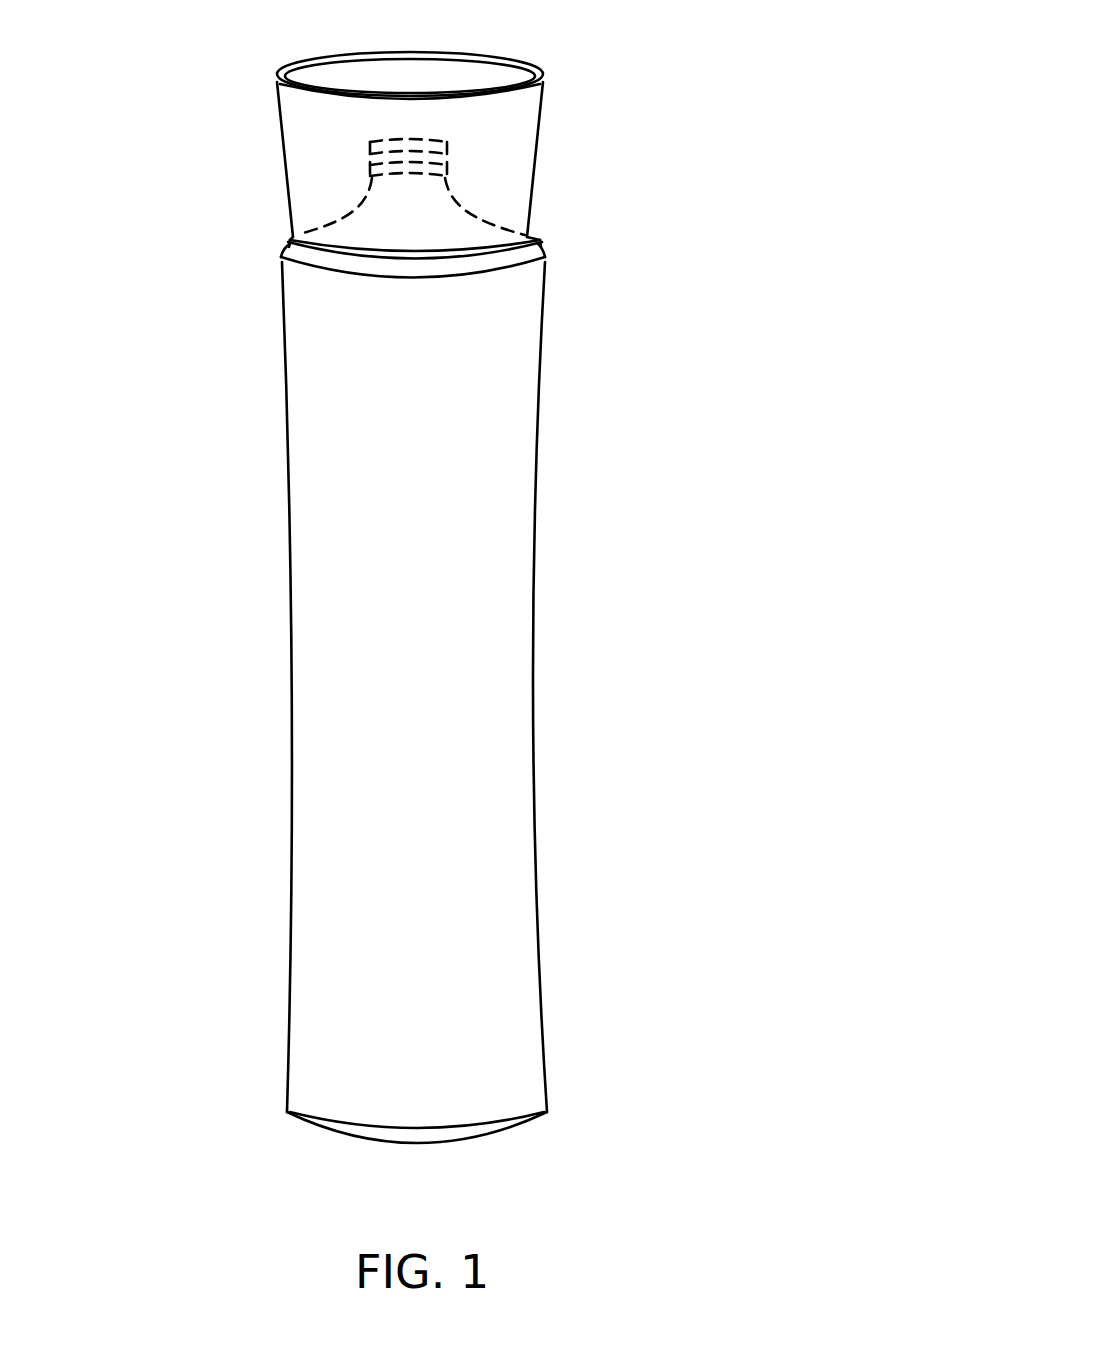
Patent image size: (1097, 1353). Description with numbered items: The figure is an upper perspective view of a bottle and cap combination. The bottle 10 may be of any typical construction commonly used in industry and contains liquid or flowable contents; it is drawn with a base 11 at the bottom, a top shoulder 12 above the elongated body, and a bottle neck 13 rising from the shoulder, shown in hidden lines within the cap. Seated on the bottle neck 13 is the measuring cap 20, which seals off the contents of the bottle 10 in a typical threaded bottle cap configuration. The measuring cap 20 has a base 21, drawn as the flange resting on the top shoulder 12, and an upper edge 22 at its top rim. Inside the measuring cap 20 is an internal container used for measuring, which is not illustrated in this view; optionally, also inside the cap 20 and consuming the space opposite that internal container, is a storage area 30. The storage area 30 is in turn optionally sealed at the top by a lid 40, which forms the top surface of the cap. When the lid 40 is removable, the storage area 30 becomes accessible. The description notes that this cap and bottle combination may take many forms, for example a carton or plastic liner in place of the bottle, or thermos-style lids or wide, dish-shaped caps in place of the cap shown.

The bottle 10 is at (478, 588).
The base 11 is at (575, 1103).
The top shoulder 12 is at (280, 257).
The bottle neck 13 is at (435, 218).
The measuring cap 20 is at (416, 160).
The base 21 is at (530, 230).
The upper edge 22 is at (277, 97).
The storage area 30 is at (323, 145).
The lid 40 is at (550, 65).